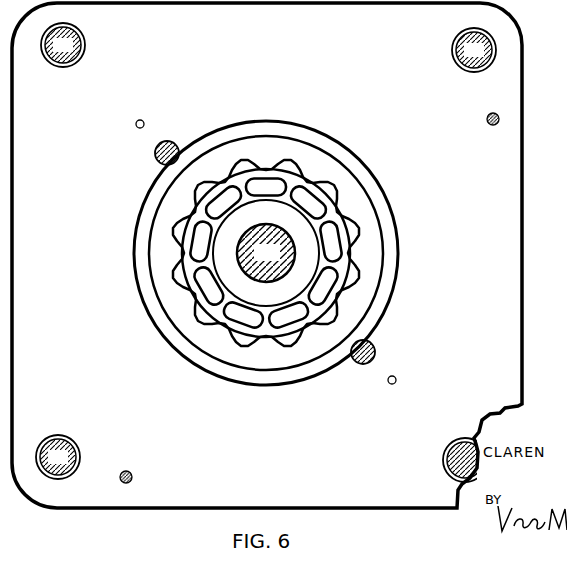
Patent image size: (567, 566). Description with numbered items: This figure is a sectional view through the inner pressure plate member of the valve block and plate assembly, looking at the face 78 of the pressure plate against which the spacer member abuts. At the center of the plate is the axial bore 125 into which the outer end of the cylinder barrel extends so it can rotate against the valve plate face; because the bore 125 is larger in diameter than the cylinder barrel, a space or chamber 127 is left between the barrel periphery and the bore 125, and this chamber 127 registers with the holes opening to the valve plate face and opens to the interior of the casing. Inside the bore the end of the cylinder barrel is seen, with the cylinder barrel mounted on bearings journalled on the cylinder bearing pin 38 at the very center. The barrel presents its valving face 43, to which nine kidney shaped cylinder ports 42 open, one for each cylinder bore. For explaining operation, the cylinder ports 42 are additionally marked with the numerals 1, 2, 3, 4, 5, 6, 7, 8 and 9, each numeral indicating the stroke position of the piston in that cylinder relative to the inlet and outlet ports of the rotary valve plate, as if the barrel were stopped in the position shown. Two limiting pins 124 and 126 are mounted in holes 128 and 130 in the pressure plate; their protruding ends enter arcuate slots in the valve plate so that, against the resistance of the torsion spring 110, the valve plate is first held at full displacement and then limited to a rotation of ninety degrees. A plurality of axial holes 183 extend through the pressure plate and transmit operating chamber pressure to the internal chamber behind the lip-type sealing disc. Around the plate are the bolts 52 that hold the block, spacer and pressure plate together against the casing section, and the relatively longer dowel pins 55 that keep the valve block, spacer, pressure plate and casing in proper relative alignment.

The torsion spring 110 is at (289, 254).
The face of the inner-pressure plate member 78 is at (266, 210).
The axial bore 125 is at (314, 156).
The chamber 127 is at (348, 202).
The kidney shaped port 42 is at (344, 249).
The cylinder bearing pin 38 is at (266, 253).
The cylinder port numeral 9 is at (262, 184).
The cylinder port numeral 8 is at (312, 203).
The cylinder port numeral 7 is at (332, 242).
The cylinder port numeral 6 is at (325, 287).
The cylinder port numeral 5 is at (292, 325).
The cylinder port numeral 4 is at (236, 325).
The cylinder port numeral 3 is at (203, 284).
The cylinder port numeral 2 is at (196, 238).
The cylinder port numeral 1 is at (222, 199).
The cylinder barrel valving face 43 is at (204, 306).
The bolts 52 is at (447, 461).
The limiting pin 124 is at (157, 160).
The hole 128 is at (176, 141).
The limiting pin 126 is at (372, 347).
The hole 130 is at (363, 364).
The axial holes 183 is at (140, 120).
The dowel pins 55 is at (490, 113).